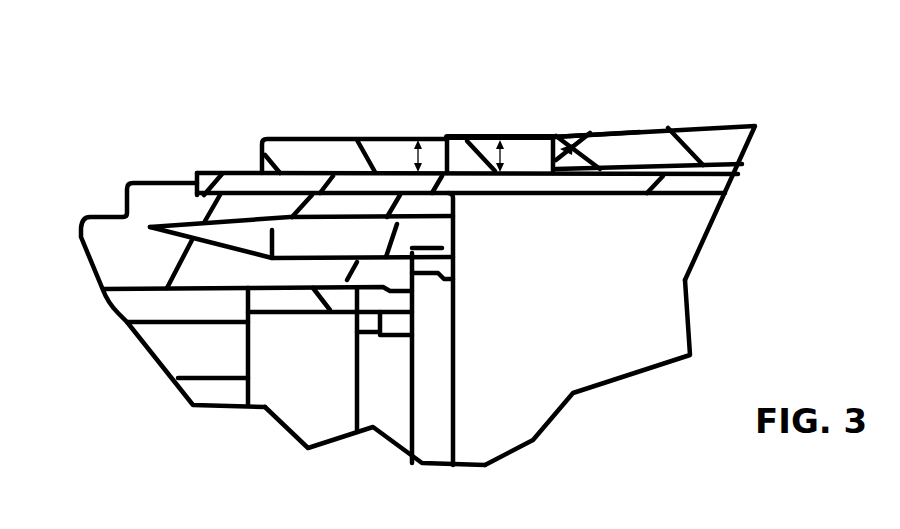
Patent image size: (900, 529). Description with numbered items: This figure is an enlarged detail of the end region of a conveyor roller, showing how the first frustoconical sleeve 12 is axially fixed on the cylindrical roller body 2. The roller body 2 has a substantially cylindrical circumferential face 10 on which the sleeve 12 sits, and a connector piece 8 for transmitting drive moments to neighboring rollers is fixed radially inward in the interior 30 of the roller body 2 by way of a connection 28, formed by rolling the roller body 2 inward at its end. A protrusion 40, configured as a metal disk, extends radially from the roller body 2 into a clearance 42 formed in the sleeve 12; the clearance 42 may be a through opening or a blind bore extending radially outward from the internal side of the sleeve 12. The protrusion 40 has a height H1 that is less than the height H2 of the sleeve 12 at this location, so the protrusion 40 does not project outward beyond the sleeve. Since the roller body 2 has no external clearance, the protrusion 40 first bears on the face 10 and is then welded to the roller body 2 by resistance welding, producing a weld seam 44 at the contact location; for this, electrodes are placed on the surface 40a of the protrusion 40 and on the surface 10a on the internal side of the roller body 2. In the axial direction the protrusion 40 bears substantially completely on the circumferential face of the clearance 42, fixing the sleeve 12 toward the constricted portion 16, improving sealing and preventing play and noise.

The roller body 2 is at (684, 184).
The connector piece 8 is at (113, 240).
The circumferential face 10 is at (727, 148).
The surface on the internal side of the roller body 10a is at (533, 203).
The first frustoconical sleeve 12 is at (653, 128).
The constricted portion 16 is at (278, 148).
The connection 28 is at (320, 345).
The interior 30 is at (547, 365).
The protrusion 40 is at (472, 138).
The surface of the protrusion 40a is at (508, 122).
The clearance 42 is at (588, 130).
The weld seam 44 is at (537, 140).
The height of the protrusion H1 is at (503, 160).
The height of the frustoconical sleeve H2 is at (406, 139).